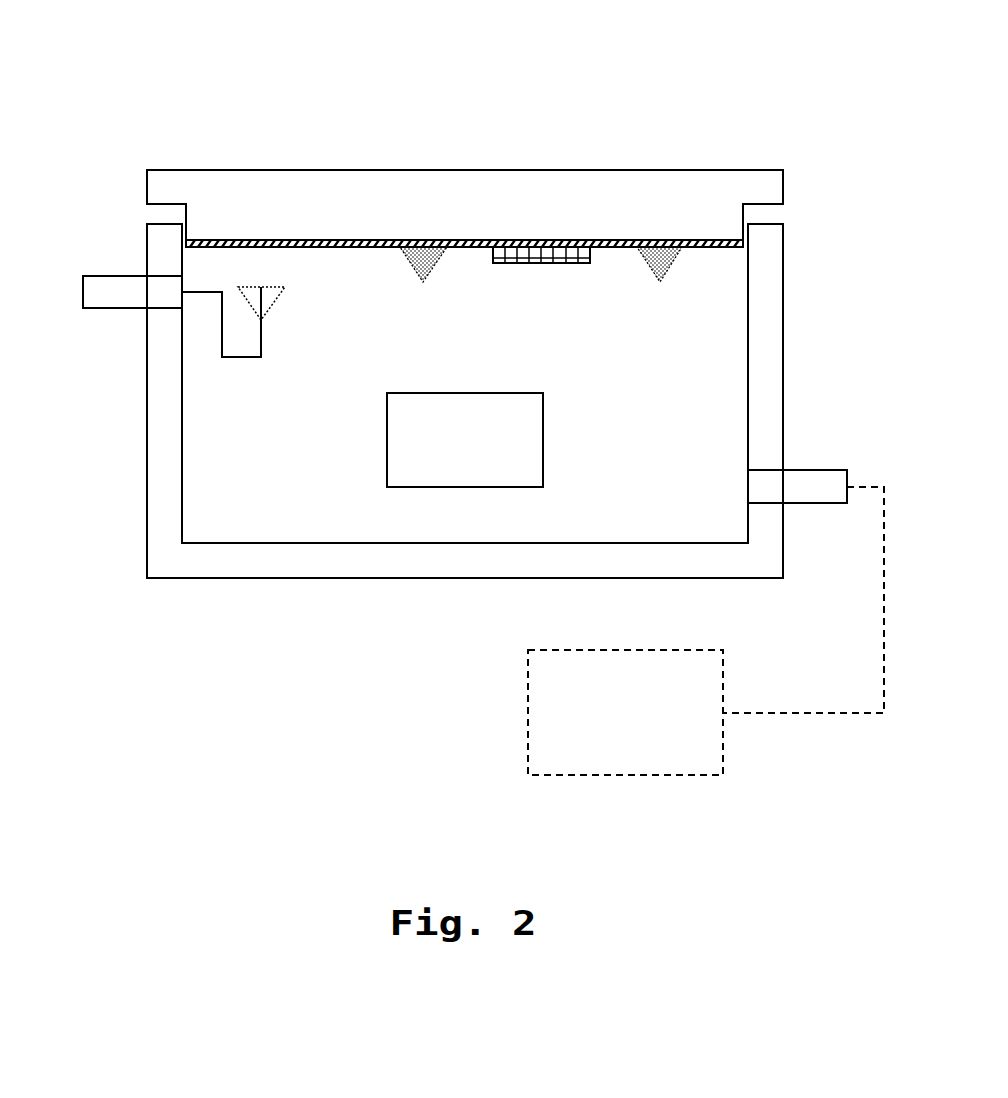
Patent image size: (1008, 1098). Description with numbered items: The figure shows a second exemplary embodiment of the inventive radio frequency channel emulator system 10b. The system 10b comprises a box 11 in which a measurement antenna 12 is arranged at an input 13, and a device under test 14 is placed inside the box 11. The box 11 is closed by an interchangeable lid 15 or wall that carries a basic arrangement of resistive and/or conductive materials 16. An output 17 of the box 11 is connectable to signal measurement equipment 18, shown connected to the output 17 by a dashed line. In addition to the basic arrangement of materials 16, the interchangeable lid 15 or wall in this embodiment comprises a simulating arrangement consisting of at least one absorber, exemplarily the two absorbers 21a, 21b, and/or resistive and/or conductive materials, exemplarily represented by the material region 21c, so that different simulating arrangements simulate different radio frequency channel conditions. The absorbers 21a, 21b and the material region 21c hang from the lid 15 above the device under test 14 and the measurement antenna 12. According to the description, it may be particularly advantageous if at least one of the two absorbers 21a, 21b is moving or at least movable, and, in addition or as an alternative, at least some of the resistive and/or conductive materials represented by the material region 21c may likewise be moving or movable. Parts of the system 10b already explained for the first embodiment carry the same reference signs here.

The radio frequency channel emulator system 10b is at (204, 67).
The box 11 is at (783, 383).
The measurement antenna 12 is at (277, 302).
The input 13 is at (83, 290).
The device under test 14 is at (543, 440).
The interchangeable lid 15 is at (465, 169).
The resistive and/or conductive materials 16 is at (553, 240).
The output 17 is at (822, 470).
The signal measurement equipment 18 is at (528, 711).
The absorber 21a is at (436, 265).
The absorber 21b is at (647, 268).
The material region 21c is at (543, 261).